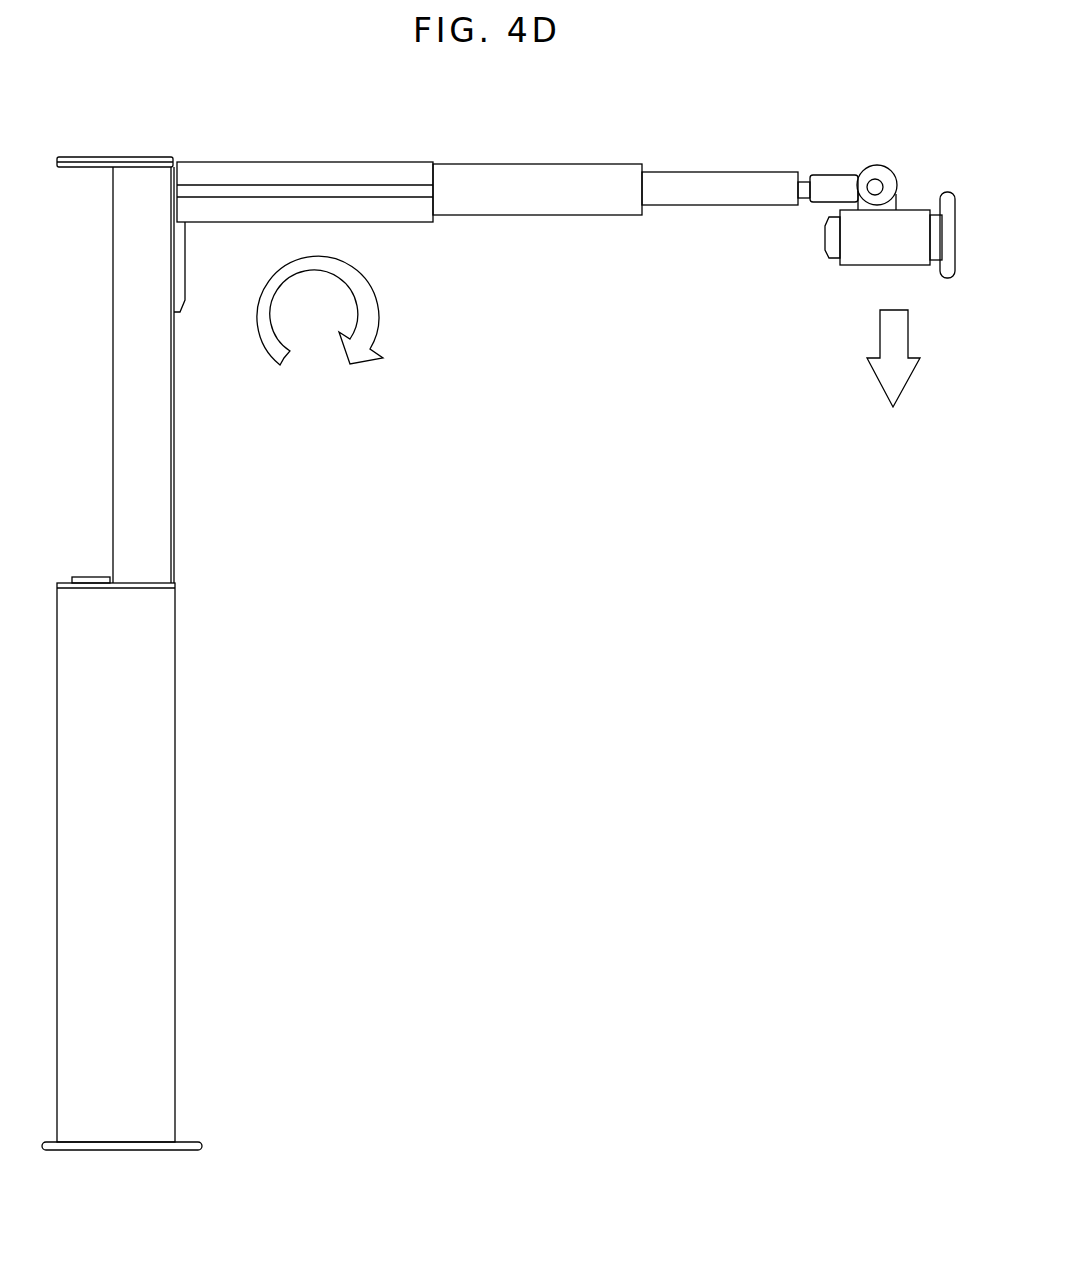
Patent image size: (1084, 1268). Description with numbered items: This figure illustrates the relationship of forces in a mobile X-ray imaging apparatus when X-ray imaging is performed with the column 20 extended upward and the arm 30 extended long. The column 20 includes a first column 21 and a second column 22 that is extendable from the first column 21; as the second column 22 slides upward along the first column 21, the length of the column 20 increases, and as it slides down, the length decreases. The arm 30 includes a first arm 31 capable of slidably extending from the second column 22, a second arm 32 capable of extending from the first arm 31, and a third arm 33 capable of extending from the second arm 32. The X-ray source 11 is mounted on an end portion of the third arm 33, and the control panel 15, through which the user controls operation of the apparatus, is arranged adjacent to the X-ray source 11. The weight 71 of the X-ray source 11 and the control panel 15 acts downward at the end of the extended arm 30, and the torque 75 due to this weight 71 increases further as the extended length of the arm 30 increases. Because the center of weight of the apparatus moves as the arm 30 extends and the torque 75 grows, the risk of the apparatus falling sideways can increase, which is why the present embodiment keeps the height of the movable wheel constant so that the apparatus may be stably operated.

The X-ray source 11 is at (916, 212).
The control panel 15 is at (947, 192).
The column 20 is at (170, 654).
The first column 21 is at (145, 859).
The second column 22 is at (170, 525).
The arm 30 is at (492, 191).
The first arm 31 is at (307, 162).
The second arm 32 is at (466, 164).
The third arm 33 is at (726, 158).
The weight 71 is at (903, 330).
The torque 75 is at (363, 295).